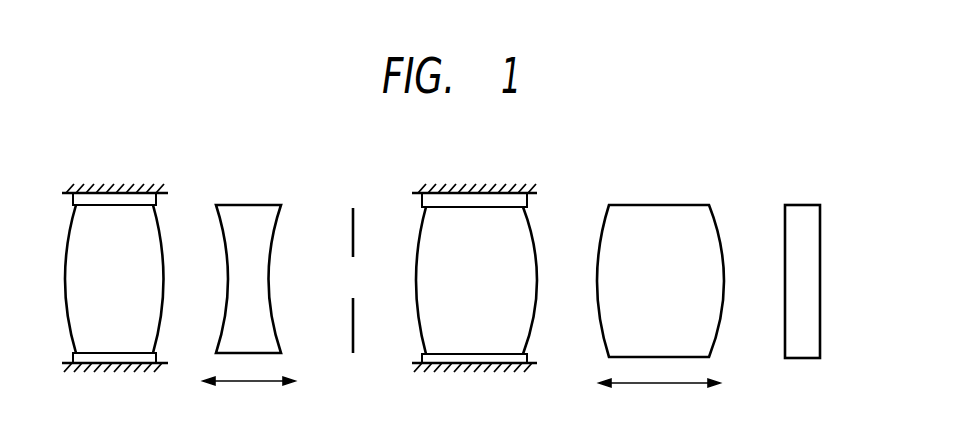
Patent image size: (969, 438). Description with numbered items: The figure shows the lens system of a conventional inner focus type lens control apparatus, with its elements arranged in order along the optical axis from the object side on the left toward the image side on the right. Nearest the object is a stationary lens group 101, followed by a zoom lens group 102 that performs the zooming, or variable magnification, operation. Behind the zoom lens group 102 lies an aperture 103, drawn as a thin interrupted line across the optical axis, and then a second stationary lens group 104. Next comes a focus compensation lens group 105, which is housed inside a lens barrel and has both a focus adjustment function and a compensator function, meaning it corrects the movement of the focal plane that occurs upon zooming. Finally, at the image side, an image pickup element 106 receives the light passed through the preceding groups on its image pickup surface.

The stationary lens group 101 is at (118, 193).
The zoom lens group 102 is at (245, 205).
The aperture 103 is at (353, 208).
The stationary lens group 104 is at (470, 193).
The focus compensation lens group 105 is at (648, 205).
The image pickup element 106 is at (784, 218).